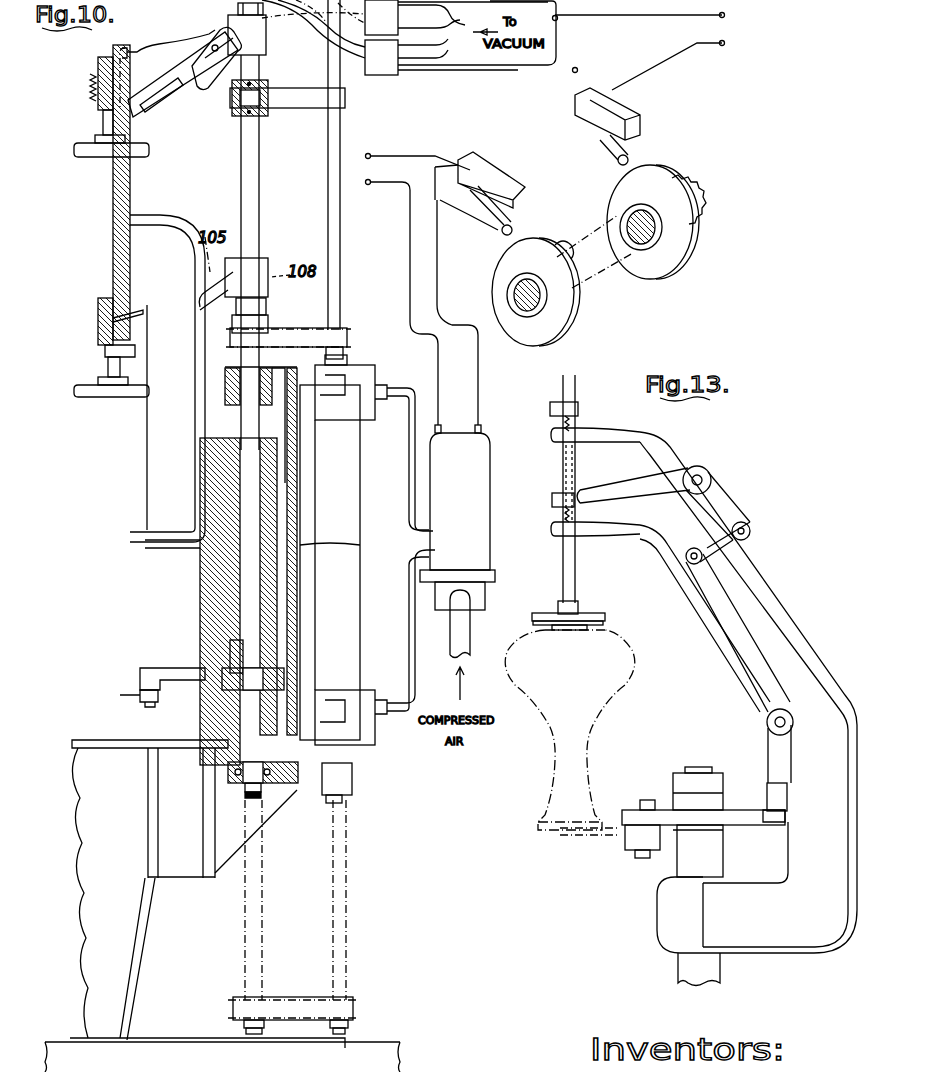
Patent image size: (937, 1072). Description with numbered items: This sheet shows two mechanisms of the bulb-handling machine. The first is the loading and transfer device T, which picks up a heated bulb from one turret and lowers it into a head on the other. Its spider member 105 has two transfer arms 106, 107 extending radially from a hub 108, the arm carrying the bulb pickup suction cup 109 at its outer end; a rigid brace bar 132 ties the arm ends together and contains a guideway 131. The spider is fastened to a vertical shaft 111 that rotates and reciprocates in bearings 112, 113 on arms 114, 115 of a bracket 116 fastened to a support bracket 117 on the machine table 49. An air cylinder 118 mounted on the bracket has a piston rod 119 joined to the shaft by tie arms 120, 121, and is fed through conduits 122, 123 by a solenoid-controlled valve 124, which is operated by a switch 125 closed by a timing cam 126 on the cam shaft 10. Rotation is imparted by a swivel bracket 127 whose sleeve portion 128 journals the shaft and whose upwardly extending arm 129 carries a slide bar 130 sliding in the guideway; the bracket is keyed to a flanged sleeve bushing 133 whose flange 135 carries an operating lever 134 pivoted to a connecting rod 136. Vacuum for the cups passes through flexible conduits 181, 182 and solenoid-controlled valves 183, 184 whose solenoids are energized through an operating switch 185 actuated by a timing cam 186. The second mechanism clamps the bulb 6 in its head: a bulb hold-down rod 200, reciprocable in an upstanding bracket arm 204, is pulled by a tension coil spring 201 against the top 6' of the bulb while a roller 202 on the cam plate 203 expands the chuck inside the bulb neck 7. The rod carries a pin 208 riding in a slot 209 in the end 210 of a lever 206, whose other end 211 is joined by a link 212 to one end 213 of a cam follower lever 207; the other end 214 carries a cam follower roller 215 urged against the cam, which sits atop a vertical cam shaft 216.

In FIG. 10, the loading and transfer device T is at (93, 187).
In FIG. 10, the guideway 131 is at (96, 67).
In FIG. 10, the brace bar 132 is at (88, 88).
In FIG. 10, the bulb pickup suction cup 109 is at (84, 145).
In FIG. 10, the transfer arm 106 is at (150, 97).
In FIG. 10, the spider member 105 is at (180, 95).
In FIG. 10, the transfer arm 107 is at (210, 60).
In FIG. 10, the hub 108 is at (263, 45).
In FIG. 10, the flexible conduit 181 is at (326, 22).
In FIG. 10, the flexible conduit 182 is at (205, 28).
In FIG. 10, the solenoid-controlled valve 183 is at (393, 25).
In FIG. 10, the solenoid-controlled valve 184 is at (392, 74).
In FIG. 10, the tie arm 120 is at (305, 105).
In FIG. 10, the piston rod 119 is at (340, 267).
In FIG. 10, the vertical shaft 111 is at (255, 233).
In FIG. 10, the bracket arm 114 is at (282, 346).
In FIG. 10, the upwardly extending arm 129 is at (150, 400).
In FIG. 10, the swivel bracket 127 is at (207, 548).
In FIG. 10, the slide bar 130 is at (96, 305).
In FIG. 10, the bearing 112 is at (228, 380).
In FIG. 10, the sleeve portion 128 is at (208, 602).
In FIG. 10, the flanged sleeve bushing 133 is at (230, 655).
In FIG. 10, the flange 135 is at (222, 690).
In FIG. 10, the operating lever 134 is at (168, 665).
In FIG. 10, the connecting rod 136 is at (130, 692).
In FIG. 10, the bearing 113 is at (228, 720).
In FIG. 10, the support bracket 117 is at (110, 737).
In FIG. 10, the bracket arm 115 is at (285, 805).
In FIG. 10, the tie arm 121 is at (287, 792).
In FIG. 10, the machine table 49 is at (380, 1045).
In FIG. 10, the bracket 116 is at (358, 546).
In FIG. 10, the air cylinder 118 is at (357, 587).
In FIG. 10, the conduit 122 is at (396, 387).
In FIG. 10, the conduit 123 is at (396, 720).
In FIG. 10, the solenoid-controlled valve 124 is at (485, 463).
In FIG. 10, the switch 125 is at (490, 172).
In FIG. 10, the timing cam 126 is at (565, 318).
In FIG. 10, the cam shaft 10 is at (590, 226).
In FIG. 10, the timing cam 186 is at (695, 237).
In FIG. 10, the operating switch 185 is at (635, 108).
In FIG. 13, the bulb hold-down rod 200 is at (576, 576).
In FIG. 13, the tension coil spring 201 is at (578, 424).
In FIG. 13, the pin 208 is at (552, 505).
In FIG. 13, the slot 209 is at (595, 497).
In FIG. 13, the lever 206 is at (713, 478).
In FIG. 13, the other end of lever 211 is at (735, 515).
In FIG. 13, the link 212 is at (740, 555).
In FIG. 13, the end of lever 210 is at (616, 520).
In FIG. 13, the end of cam follower lever 213 is at (707, 615).
In FIG. 13, the bracket arm 204 is at (790, 612).
In FIG. 13, the cam follower lever 207 is at (765, 742).
In FIG. 13, the other end of cam follower lever 214 is at (780, 797).
In FIG. 13, the cam follower roller 215 is at (785, 820).
In FIG. 13, the roller 202 is at (628, 848).
In FIG. 13, the cam plate 203 is at (741, 825).
In FIG. 13, the cam shaft 216 is at (685, 985).
In FIG. 13, the top of bulb 6' is at (587, 624).
In FIG. 13, the bulb 6 is at (577, 730).
In FIG. 13, the bulb neck 7 is at (548, 766).